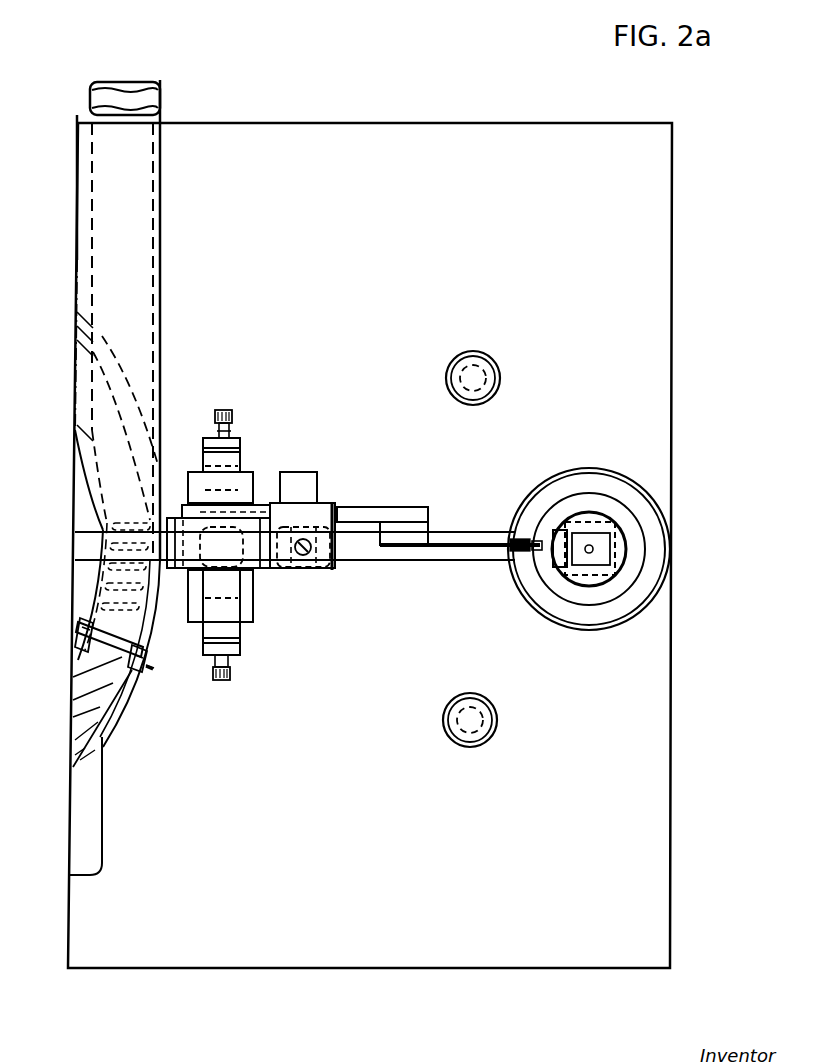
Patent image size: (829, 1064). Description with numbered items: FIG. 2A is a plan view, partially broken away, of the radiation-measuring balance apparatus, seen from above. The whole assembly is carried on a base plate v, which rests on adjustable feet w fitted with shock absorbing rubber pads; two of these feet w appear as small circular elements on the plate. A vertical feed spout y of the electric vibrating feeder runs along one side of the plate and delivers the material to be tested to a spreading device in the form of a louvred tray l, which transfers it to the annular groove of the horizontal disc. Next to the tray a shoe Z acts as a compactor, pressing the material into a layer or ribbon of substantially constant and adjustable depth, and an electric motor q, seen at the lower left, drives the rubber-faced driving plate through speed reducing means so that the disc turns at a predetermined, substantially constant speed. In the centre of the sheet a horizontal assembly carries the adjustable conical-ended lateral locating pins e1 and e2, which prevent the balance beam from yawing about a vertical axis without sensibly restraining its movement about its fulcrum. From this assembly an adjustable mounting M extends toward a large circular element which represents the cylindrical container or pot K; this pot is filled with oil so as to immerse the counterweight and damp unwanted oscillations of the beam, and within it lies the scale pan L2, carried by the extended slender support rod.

The feed spout y is at (135, 278).
The louvred tray l is at (128, 513).
The lateral locating pin e2 is at (232, 415).
The lateral locating pin e1 is at (228, 682).
The adjustable mounting M is at (385, 512).
The adjustable feet w is at (485, 372).
The scale pan L2 is at (627, 530).
The cylindrical container or pot K is at (635, 600).
The shoe Z is at (103, 690).
The electric motor q is at (80, 858).
The base plate v is at (643, 878).